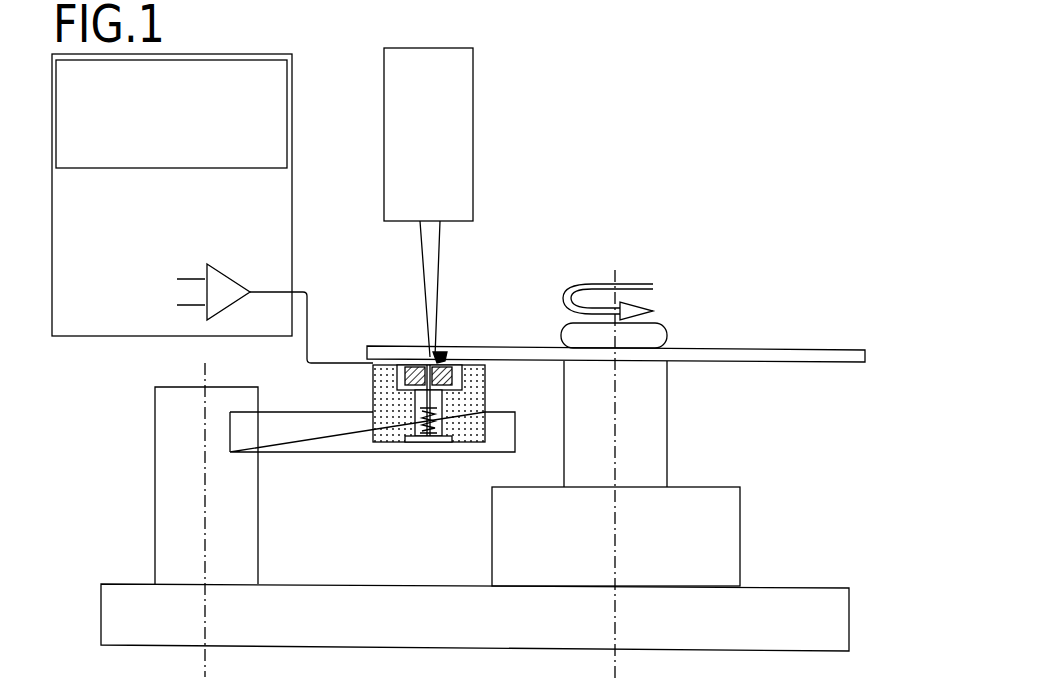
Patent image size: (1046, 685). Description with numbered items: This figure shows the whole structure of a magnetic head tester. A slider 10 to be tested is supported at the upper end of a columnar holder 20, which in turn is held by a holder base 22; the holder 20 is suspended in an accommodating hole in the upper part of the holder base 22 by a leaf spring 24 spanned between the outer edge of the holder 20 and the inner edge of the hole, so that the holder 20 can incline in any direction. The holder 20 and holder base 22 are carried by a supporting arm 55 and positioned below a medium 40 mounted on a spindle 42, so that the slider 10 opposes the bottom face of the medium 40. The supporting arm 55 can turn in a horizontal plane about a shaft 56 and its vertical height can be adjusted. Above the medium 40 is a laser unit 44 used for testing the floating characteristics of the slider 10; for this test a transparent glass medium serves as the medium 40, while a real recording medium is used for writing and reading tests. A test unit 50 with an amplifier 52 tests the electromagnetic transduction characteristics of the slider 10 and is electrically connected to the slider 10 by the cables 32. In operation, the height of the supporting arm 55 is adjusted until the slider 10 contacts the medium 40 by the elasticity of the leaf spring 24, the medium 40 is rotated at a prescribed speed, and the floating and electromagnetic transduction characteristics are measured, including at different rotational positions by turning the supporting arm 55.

The slider 10 is at (441, 352).
The holder 20 is at (410, 387).
The holder base 22 is at (380, 420).
The leaf spring 24 is at (463, 400).
The cables 32 is at (312, 335).
The medium 40 is at (767, 350).
The spindle 42 is at (648, 458).
The laser unit 44 is at (453, 163).
The test unit 50 is at (293, 67).
The amplifier 52 is at (223, 283).
The supporting arm 55 is at (243, 432).
The shaft 56 is at (165, 462).